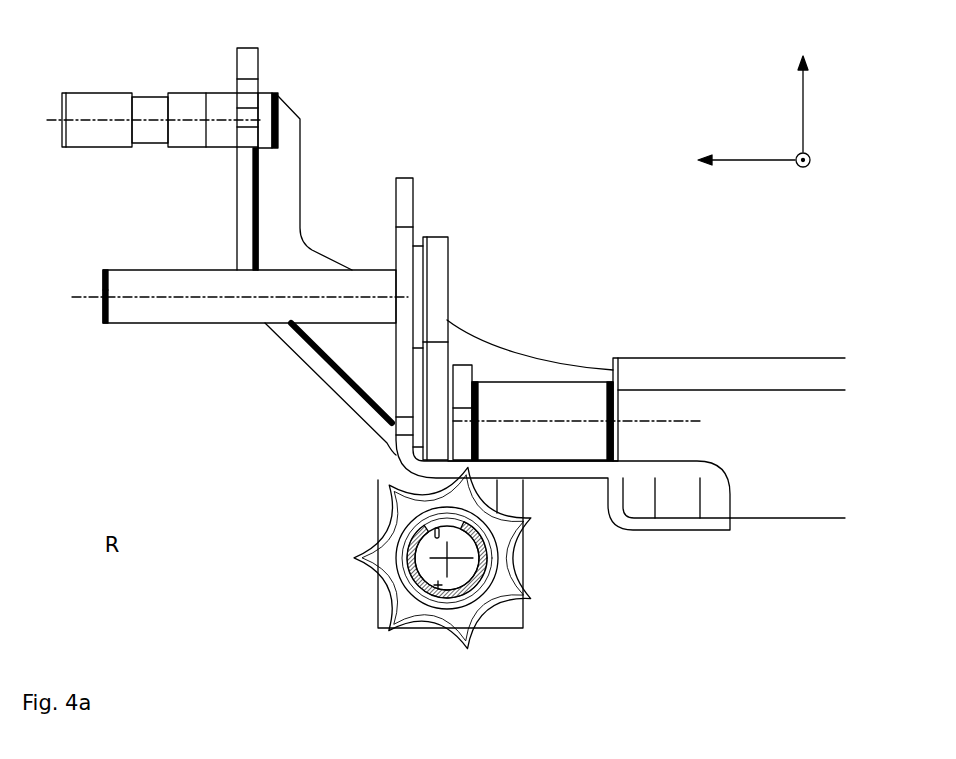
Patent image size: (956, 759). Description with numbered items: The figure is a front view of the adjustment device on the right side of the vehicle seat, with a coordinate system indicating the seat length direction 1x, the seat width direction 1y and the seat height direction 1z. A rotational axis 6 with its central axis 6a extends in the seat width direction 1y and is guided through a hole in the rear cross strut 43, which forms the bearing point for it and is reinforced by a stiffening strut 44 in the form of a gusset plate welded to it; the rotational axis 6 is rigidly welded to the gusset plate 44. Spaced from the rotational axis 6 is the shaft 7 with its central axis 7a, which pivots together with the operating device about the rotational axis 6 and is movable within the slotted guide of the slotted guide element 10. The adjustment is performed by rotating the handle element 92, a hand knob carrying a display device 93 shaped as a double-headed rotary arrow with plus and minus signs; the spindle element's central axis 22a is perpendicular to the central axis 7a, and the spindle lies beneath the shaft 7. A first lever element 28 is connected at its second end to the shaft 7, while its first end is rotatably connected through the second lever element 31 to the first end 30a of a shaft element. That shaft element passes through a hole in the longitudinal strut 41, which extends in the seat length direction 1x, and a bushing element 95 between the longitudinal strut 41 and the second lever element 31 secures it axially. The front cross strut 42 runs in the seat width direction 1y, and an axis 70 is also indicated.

The rotational axis 6 is at (101, 107).
The central axis of the rotational axis 6a is at (220, 121).
The shaft 7 is at (119, 283).
The central axis of the shaft 7a is at (150, 299).
The slotted guide element 10 is at (396, 193).
The central axis of the spindle element 22a is at (458, 540).
The first lever element 28 is at (434, 245).
The first end of the shaft element 30a is at (541, 400).
The second lever element 31 is at (462, 365).
The longitudinal strut 41 is at (697, 527).
The front cross strut 42 is at (788, 415).
The rear cross strut 43 is at (247, 228).
The stiffening strut 44 is at (305, 251).
The axis 70 is at (642, 419).
The handle element 92 is at (383, 563).
The display device 93 is at (473, 560).
The bushing element 95 is at (560, 447).
The seat length direction 1x is at (797, 170).
The seat width direction 1y is at (727, 164).
The seat height direction 1z is at (804, 118).